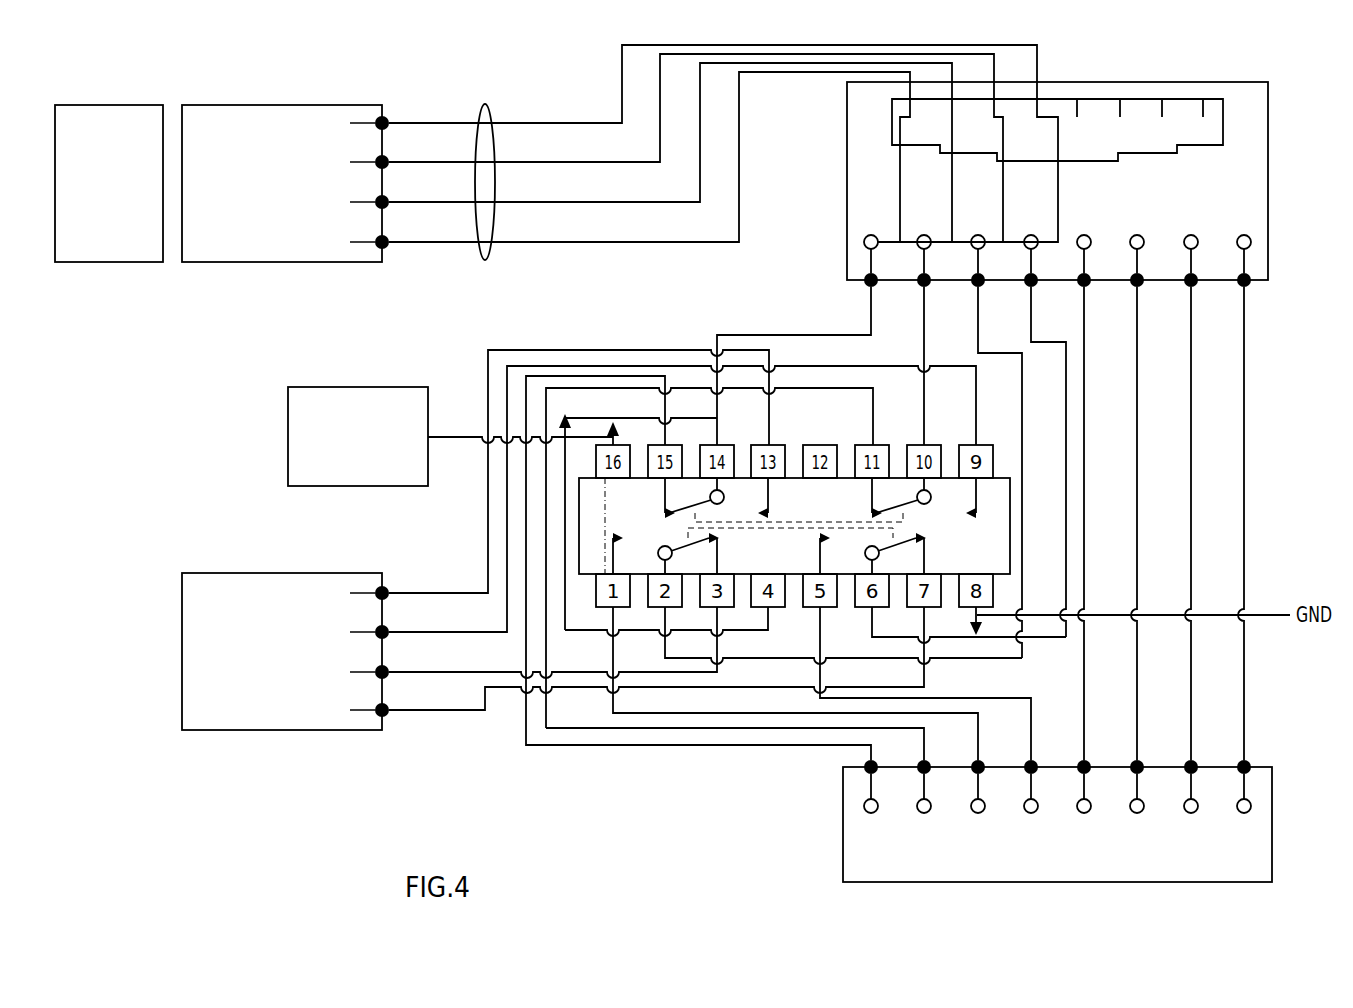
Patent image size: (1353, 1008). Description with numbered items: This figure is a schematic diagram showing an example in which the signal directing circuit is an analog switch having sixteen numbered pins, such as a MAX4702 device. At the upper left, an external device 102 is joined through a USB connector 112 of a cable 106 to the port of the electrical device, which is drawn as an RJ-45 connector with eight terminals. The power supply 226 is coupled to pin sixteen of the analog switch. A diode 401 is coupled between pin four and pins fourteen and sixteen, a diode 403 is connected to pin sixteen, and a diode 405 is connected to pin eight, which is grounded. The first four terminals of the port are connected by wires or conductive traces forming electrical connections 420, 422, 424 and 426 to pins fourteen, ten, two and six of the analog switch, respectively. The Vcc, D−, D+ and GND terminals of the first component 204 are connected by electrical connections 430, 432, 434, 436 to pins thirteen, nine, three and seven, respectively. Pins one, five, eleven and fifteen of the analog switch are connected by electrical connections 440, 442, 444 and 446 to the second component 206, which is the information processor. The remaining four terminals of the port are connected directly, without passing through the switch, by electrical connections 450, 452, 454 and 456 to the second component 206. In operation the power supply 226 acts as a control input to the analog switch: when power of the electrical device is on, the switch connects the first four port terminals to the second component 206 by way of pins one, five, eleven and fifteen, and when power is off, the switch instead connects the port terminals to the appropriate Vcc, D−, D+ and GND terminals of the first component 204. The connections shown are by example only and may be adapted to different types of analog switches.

The external device 102 is at (137, 263).
The USB connector 112 is at (278, 263).
The cable 106 is at (480, 247).
The power supply 226 is at (355, 387).
The diode 401 is at (563, 420).
The diode 403 is at (618, 428).
The diode 405 is at (970, 632).
The electrical connection 420 is at (765, 333).
The electrical connection 422 is at (922, 343).
The electrical connection 424 is at (1012, 353).
The electrical connection 426 is at (1062, 368).
The electrical connection 430 is at (413, 592).
The electrical connection 432 is at (413, 631).
The electrical connection 434 is at (413, 671).
The electrical connection 436 is at (413, 709).
The electrical connection 440 is at (770, 748).
The electrical connection 442 is at (868, 730).
The electrical connection 444 is at (950, 714).
The electrical connection 446 is at (1012, 699).
The electrical connection 450 is at (1080, 670).
The electrical connection 452 is at (1133, 670).
The electrical connection 454 is at (1187, 670).
The electrical connection 456 is at (1240, 670).
The first component 204 is at (275, 730).
The second component 206 is at (843, 832).